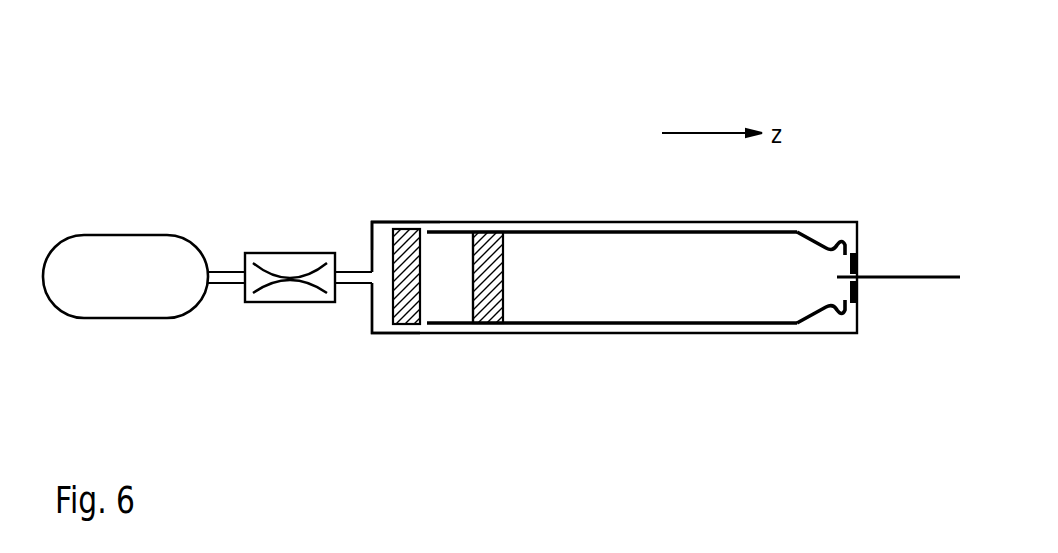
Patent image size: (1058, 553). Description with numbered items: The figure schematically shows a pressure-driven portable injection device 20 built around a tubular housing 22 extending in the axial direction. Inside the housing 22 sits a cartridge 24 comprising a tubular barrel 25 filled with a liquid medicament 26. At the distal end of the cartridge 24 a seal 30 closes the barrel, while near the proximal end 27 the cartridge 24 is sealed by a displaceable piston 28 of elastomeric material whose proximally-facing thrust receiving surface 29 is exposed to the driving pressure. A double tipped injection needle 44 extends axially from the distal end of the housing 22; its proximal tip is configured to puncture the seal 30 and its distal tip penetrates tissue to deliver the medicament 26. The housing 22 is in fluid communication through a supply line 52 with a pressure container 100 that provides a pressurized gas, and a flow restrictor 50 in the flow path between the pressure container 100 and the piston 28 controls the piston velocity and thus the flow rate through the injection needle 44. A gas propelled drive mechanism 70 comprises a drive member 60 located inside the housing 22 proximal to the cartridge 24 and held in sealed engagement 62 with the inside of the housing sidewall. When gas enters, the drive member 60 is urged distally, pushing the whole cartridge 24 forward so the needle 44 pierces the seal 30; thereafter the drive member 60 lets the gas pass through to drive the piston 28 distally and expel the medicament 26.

The pressure container 100 is at (127, 233).
The flow restrictor 50 is at (289, 252).
The supply line 52 is at (348, 277).
The injection device 20 is at (472, 178).
The housing 22 is at (400, 207).
The gas propelled drive mechanism 70 is at (408, 122).
The drive member 60 is at (403, 302).
The sealed engagement 62 is at (402, 342).
The tubular barrel 25 is at (575, 230).
The proximal end 27 is at (438, 325).
The cartridge 24 is at (633, 265).
The liquid medicament 26 is at (714, 255).
The piston 28 is at (493, 310).
The thrust receiving surface 29 is at (470, 303).
The seal 30 is at (837, 242).
The injection needle 44 is at (903, 275).